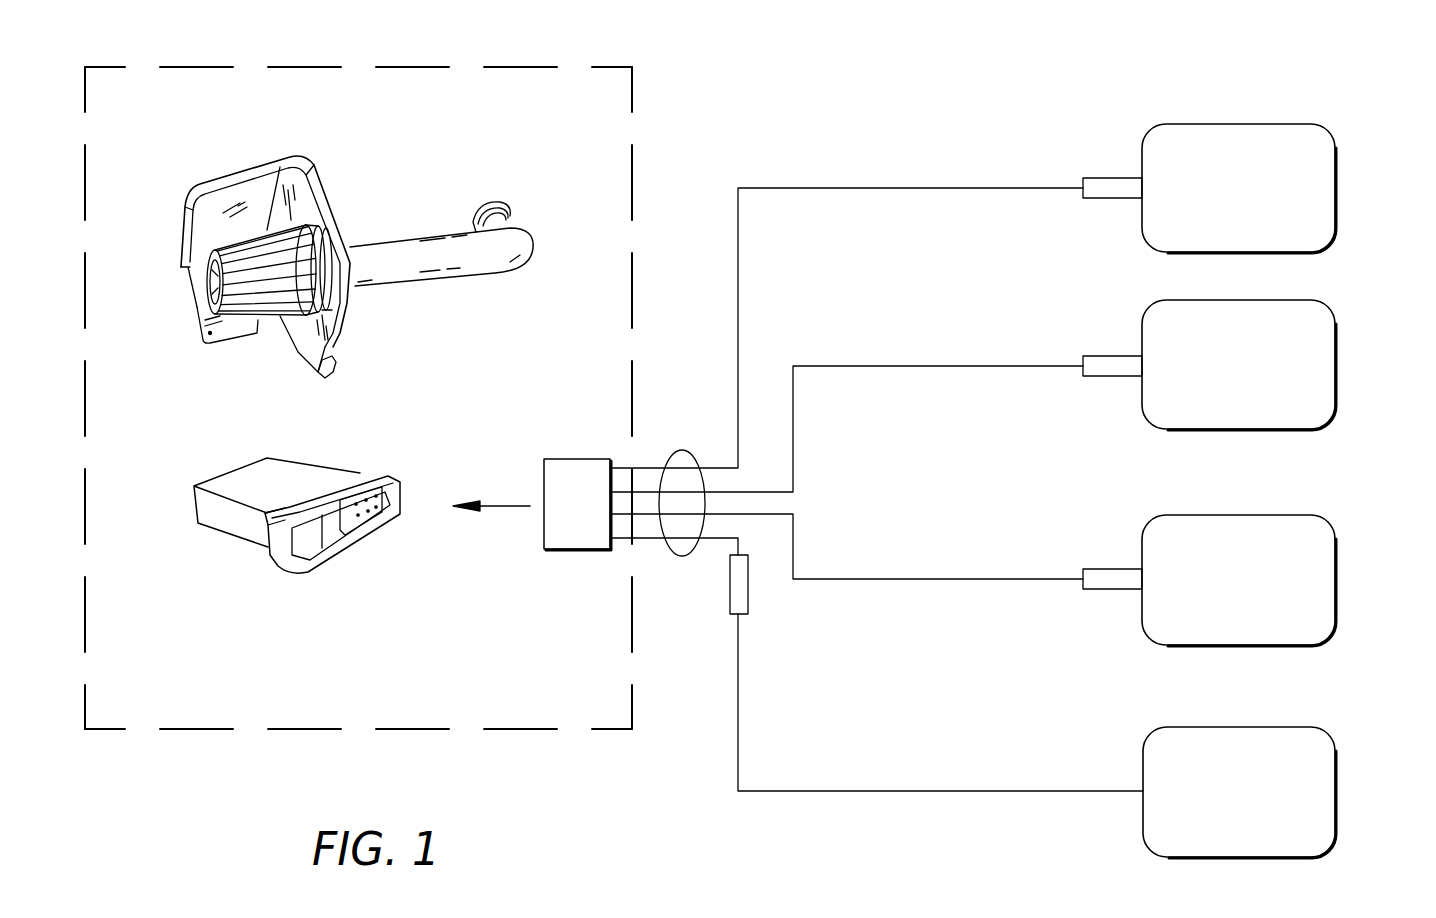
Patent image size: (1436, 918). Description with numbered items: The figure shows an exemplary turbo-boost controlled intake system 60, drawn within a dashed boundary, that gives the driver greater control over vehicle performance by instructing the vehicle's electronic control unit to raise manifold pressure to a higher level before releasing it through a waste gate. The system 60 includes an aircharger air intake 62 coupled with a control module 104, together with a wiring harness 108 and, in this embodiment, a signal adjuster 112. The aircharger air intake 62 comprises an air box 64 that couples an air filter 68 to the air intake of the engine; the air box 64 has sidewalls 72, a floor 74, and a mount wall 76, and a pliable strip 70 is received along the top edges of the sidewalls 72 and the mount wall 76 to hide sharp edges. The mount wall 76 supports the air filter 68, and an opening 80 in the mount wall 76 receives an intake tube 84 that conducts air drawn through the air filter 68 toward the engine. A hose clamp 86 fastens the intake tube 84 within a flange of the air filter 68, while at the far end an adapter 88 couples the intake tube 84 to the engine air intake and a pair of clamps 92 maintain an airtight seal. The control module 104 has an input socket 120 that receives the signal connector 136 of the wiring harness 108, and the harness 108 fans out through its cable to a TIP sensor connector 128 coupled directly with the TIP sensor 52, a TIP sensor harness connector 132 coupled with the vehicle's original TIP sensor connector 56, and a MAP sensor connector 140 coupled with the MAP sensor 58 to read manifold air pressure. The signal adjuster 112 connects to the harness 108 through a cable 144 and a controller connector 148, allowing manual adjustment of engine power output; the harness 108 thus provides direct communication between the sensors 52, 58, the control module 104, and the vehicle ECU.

The TIP sensor 52 is at (1237, 124).
The TIP sensor connector 56 is at (1335, 368).
The MAP sensor 58 is at (1335, 581).
The turbo-boost controlled intake system 60 is at (632, 92).
The aircharger air intake 62 is at (358, 134).
The air box 64 is at (210, 180).
The air filter 68 is at (282, 317).
The pliable strip 70 is at (187, 217).
The sidewalls 72 is at (260, 183).
The floor 74 is at (203, 307).
The mount wall 76 is at (325, 350).
The opening 80 is at (327, 303).
The intake tube 84 is at (457, 277).
The hose clamp 86 is at (327, 250).
The adapter 88 is at (485, 207).
The clamps 92 is at (495, 207).
The control module 104 is at (297, 541).
The wiring harness 108 is at (682, 558).
The signal adjuster 112 is at (1335, 793).
The input socket 120 is at (370, 528).
The TIP sensor connector 128 is at (1102, 178).
The TIP sensor harness connector 132 is at (1112, 356).
The signal connector 136 is at (577, 552).
The MAP sensor connector 140 is at (1122, 589).
The cable 144 is at (977, 791).
The controller connector 148 is at (748, 593).